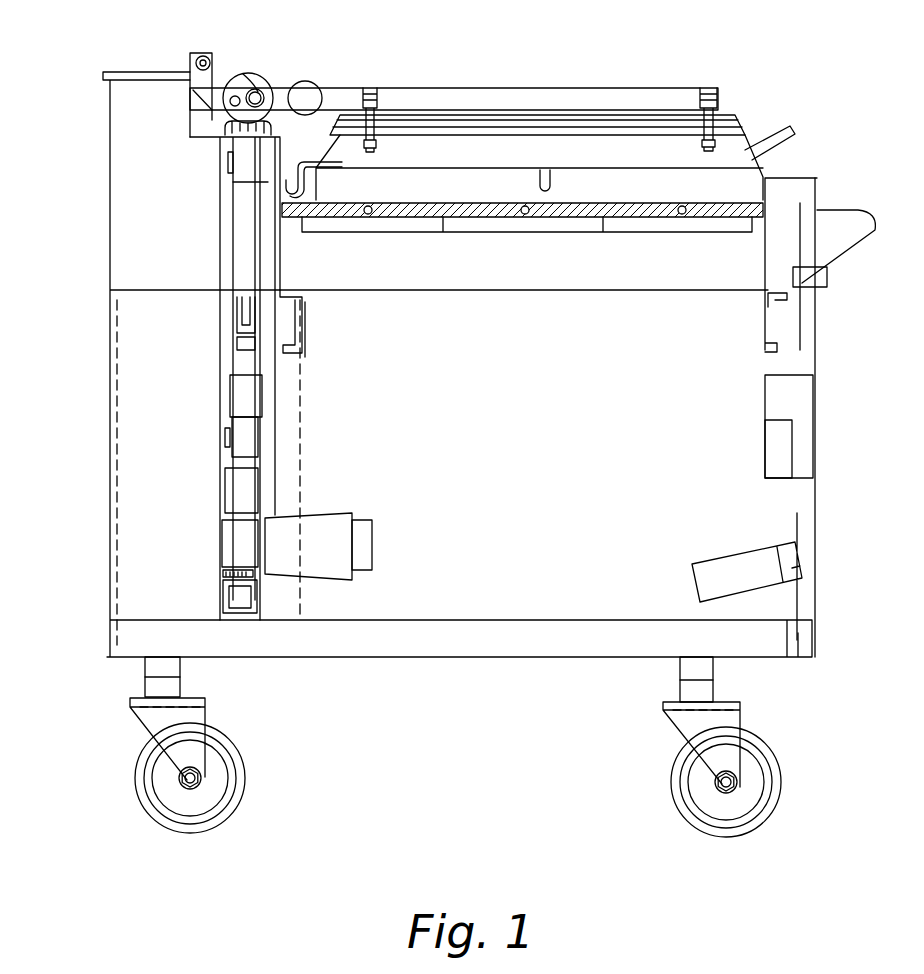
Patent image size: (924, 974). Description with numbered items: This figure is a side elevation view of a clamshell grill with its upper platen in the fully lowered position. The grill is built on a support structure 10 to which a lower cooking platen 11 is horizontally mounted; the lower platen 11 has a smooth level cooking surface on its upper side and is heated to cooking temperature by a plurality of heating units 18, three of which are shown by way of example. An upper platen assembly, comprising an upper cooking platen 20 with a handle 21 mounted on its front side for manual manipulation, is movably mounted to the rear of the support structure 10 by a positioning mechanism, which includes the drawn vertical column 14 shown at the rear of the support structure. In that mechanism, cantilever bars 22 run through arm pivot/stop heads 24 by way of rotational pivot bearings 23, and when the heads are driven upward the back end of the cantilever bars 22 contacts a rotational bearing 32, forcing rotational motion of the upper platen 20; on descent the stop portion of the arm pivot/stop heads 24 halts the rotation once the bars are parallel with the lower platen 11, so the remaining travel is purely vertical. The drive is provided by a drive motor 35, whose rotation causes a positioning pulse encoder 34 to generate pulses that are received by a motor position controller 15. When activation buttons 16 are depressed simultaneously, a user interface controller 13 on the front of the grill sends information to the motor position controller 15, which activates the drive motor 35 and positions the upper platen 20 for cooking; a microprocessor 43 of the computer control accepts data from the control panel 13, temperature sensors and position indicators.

The support structure 10 is at (273, 257).
The lower cooking platen 11 is at (718, 220).
The user interface controller 13 is at (815, 428).
The lifting column 14 is at (215, 395).
The motor position controller 15 is at (753, 553).
The activation buttons 16 is at (828, 273).
The heating units 18 is at (422, 223).
The upper cooking platen 20 is at (763, 177).
The handle 21 is at (772, 127).
The cantilever bars 22 is at (515, 88).
The rotational pivot bearings 23 is at (270, 82).
The arm pivot/stop heads 24 is at (256, 77).
The rotational bearing 32 is at (212, 60).
The positioning pulse encoder 34 is at (372, 525).
The drive motor 35 is at (328, 515).
The microprocessor 43 is at (778, 448).